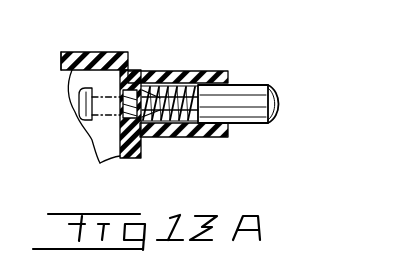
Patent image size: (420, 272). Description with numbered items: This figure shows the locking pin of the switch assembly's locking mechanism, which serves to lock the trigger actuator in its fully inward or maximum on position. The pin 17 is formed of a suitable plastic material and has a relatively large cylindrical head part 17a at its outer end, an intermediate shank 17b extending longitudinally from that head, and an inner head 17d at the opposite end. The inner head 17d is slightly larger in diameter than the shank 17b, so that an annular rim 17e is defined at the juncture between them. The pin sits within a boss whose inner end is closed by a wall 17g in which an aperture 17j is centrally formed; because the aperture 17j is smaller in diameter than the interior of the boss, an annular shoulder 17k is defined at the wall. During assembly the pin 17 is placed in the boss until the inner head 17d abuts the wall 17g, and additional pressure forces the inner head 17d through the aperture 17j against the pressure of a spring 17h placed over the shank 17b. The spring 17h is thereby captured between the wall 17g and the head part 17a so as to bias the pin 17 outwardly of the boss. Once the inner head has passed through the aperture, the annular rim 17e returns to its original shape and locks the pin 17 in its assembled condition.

The pin 17 is at (283, 89).
The cylindrical head part 17a is at (277, 123).
The intermediate shank 17b is at (168, 134).
The inner head 17d is at (128, 53).
The annular rim 17e is at (146, 86).
The wall 17g is at (98, 161).
The spring 17h is at (174, 133).
The aperture 17j is at (188, 76).
The annular shoulder 17k is at (120, 124).